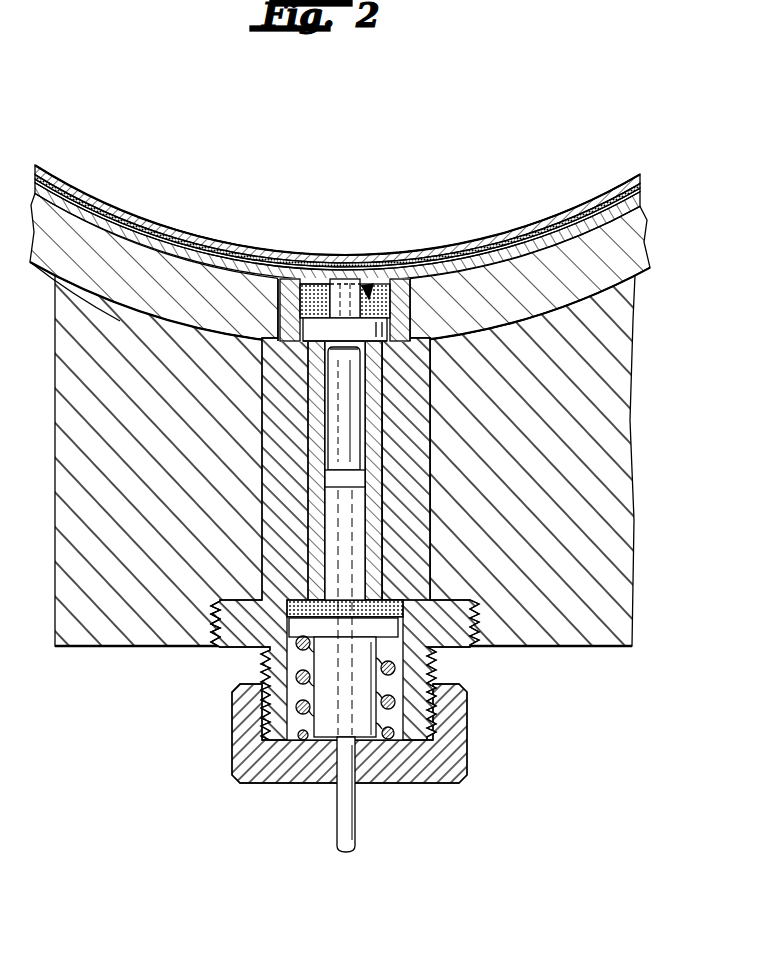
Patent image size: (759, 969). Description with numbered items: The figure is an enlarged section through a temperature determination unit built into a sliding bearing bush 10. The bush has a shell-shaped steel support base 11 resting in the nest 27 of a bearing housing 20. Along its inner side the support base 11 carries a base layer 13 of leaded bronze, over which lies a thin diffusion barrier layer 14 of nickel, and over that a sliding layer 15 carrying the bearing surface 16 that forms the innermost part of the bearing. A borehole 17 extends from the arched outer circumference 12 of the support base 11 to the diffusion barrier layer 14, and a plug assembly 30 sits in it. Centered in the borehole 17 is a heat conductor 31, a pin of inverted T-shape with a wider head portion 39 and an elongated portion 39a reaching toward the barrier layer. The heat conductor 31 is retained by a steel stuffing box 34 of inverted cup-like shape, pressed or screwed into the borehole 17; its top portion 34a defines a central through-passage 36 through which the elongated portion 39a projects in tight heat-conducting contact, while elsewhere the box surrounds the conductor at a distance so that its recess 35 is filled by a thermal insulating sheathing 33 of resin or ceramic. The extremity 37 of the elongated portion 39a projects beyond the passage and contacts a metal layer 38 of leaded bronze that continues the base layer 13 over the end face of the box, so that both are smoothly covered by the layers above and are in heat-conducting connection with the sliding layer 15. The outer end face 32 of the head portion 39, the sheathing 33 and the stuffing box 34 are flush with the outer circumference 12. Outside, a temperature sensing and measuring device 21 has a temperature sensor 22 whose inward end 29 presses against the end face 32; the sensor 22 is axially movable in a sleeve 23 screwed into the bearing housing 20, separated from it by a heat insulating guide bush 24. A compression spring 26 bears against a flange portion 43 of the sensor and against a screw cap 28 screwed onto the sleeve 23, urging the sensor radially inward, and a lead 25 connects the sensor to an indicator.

The sliding bearing bush 10 is at (505, 240).
The support base 11 is at (543, 262).
The outer circumference 12 is at (77, 293).
The base layer 13 is at (588, 215).
The diffusion barrier layer 14 is at (172, 240).
The sliding layer 15 is at (137, 223).
The bearing surface 16 is at (103, 197).
The borehole 17 is at (276, 283).
The bearing housing 20 is at (106, 630).
The temperature sensing and measuring device 21 is at (262, 521).
The temperature sensor 22 is at (347, 425).
The sleeve 23 is at (410, 556).
The heat insulating guide bush 24 is at (376, 505).
The lead 25 is at (350, 830).
The compression spring 26 is at (396, 667).
The nest 27 is at (130, 305).
The screw cap 28 is at (243, 752).
The inward end 29 is at (352, 352).
The plug assembly 30 is at (274, 305).
The heat conductor 31 is at (380, 270).
The end face 32 is at (316, 362).
The thermal insulating sheathing 33 is at (300, 333).
The stuffing box 34 is at (408, 300).
The top portion 34a is at (308, 290).
The recess 35 is at (392, 290).
The through-passage 36 is at (345, 305).
The extremity 37 is at (338, 300).
The metal layer 38 is at (297, 290).
The head portion 39 is at (405, 328).
The elongated portion 39a is at (369, 290).
The flange portion 43 is at (264, 651).